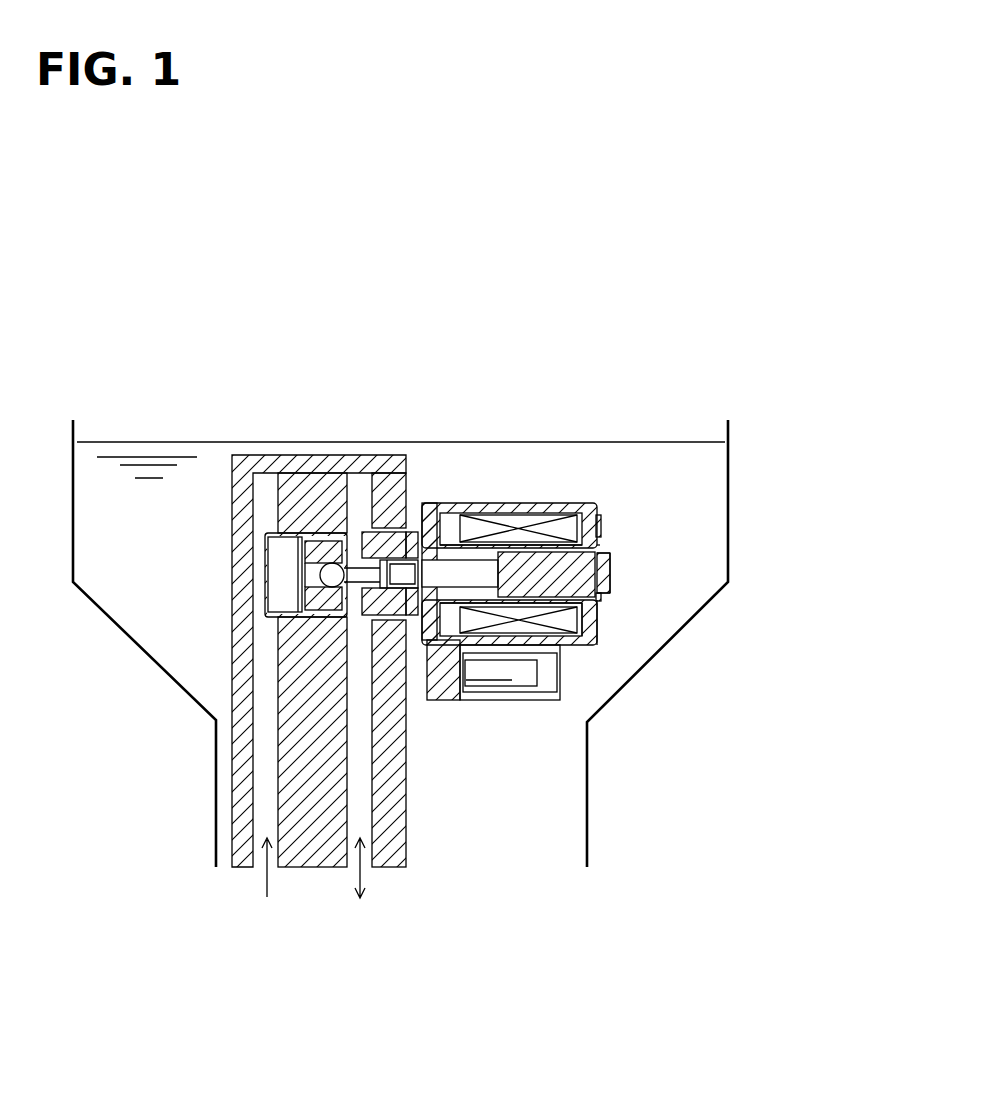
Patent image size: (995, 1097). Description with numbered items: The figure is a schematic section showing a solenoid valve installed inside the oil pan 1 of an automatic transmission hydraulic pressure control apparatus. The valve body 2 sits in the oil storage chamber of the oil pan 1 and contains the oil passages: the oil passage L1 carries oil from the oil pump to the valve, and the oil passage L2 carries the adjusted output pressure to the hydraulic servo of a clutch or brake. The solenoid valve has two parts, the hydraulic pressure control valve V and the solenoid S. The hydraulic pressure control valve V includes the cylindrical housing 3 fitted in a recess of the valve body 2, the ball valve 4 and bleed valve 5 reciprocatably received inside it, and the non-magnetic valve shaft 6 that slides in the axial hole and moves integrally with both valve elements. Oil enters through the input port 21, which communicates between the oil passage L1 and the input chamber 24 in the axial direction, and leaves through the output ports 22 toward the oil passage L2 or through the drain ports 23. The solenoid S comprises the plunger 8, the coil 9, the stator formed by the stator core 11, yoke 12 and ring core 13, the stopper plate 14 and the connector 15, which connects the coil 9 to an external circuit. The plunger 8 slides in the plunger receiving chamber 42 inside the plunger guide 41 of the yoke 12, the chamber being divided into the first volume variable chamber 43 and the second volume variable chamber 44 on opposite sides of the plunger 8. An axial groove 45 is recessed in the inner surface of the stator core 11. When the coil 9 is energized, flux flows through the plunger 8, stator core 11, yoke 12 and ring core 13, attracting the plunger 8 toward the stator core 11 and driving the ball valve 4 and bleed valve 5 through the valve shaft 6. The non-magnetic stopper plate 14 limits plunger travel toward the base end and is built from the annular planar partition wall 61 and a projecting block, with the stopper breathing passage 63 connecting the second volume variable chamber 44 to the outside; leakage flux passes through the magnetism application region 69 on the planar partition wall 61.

The oil pan 1 is at (590, 820).
The valve body 2 is at (403, 832).
The housing 3 is at (318, 612).
The ball valve 4 is at (337, 548).
The bleed valve 5 is at (394, 527).
The valve shaft 6 is at (471, 568).
The plunger 8 is at (601, 600).
The coil 9 is at (538, 503).
The stator core 11 is at (500, 503).
The yoke 12 is at (566, 503).
The ring core 13 is at (428, 530).
The stopper plate 14 is at (611, 572).
The connector 15 is at (532, 702).
The input port 21 is at (273, 570).
The output port 22 is at (357, 527).
The drain port 23 is at (414, 545).
The input chamber 24 is at (280, 550).
The plunger guide 41 is at (602, 528).
The plunger receiving chamber 42 is at (517, 503).
The first volume variable chamber 43 is at (518, 620).
The second volume variable chamber 44 is at (611, 580).
The axial groove 45 is at (446, 503).
The planar partition wall 61 is at (598, 640).
The stopper breathing passage 63 is at (607, 592).
The magnetism application region 69 is at (602, 545).
The oil passage L1 is at (265, 782).
The oil passage L2 is at (362, 798).
The hydraulic pressure control valve V is at (195, 382).
The solenoid S is at (646, 461).